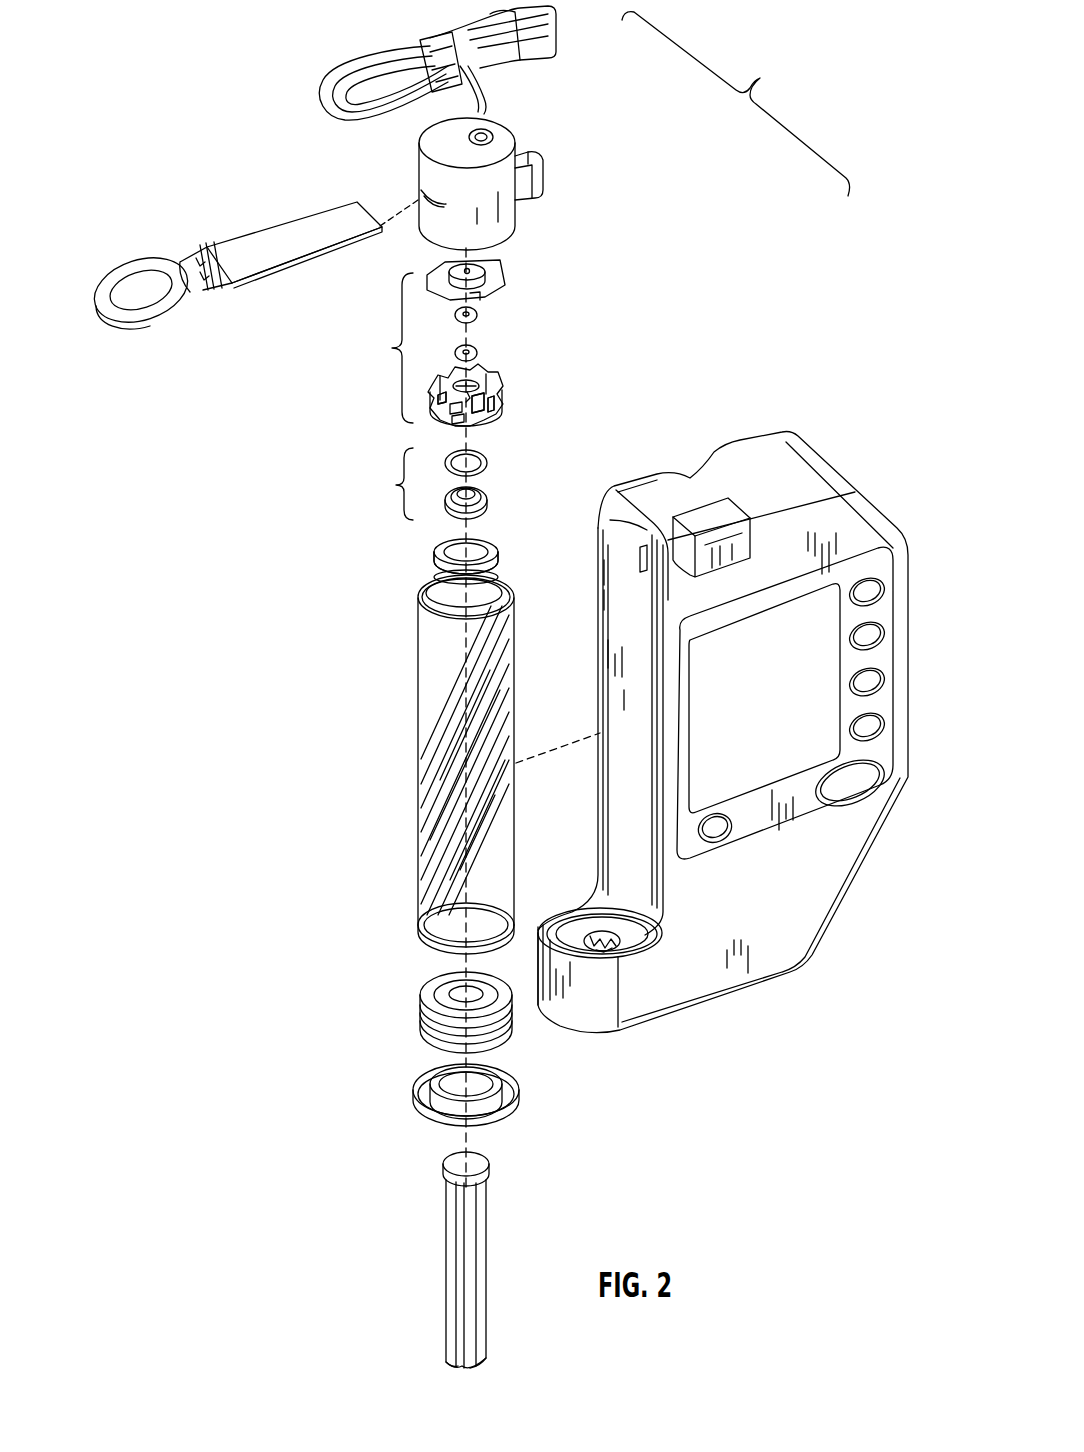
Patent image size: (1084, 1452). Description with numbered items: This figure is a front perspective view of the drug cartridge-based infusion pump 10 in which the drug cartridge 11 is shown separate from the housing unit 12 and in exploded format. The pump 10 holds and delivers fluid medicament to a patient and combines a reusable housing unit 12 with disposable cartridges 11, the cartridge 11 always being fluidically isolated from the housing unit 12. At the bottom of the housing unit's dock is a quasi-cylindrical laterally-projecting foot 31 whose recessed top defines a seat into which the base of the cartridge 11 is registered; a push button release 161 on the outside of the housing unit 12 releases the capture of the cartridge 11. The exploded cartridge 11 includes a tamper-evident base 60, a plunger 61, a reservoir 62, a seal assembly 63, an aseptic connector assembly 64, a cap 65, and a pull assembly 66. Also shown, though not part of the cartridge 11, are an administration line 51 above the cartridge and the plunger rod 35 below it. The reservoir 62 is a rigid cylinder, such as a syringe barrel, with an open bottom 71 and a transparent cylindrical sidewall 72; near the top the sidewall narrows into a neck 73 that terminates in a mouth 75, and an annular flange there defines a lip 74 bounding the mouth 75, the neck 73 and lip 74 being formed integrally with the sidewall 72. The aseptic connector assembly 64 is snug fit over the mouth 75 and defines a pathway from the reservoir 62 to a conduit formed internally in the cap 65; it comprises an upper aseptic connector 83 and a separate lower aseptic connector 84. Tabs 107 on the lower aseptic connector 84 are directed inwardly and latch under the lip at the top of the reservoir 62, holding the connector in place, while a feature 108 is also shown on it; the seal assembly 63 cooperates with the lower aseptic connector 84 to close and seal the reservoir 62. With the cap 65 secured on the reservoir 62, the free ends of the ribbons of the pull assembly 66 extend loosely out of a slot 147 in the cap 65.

The drug cartridge-based infusion pump 10 is at (736, 104).
The drug cartridge 11 is at (212, 968).
The housing unit 12 is at (723, 764).
The foot 31 is at (578, 1008).
The plunger rod 35 is at (446, 1262).
The cable 51 is at (395, 46).
The tamper-evident base 60 is at (410, 1102).
The plunger 61 is at (413, 1012).
The reservoir 62 is at (425, 761).
The seal assembly 63 is at (424, 484).
The aseptic connector assembly 64 is at (418, 348).
The cap 65 is at (512, 208).
The pull assembly 66 is at (272, 237).
The open bottom 71 is at (426, 924).
The cylindrical sidewall 72 is at (444, 827).
The neck 73 is at (460, 596).
The lip 74 is at (482, 545).
The mouth 75 is at (502, 562).
The upper aseptic connector 83 is at (514, 283).
The lower aseptic connector 84 is at (510, 388).
The tabs 107 is at (437, 420).
The valve port 108 is at (507, 400).
The slot 147 is at (417, 184).
The push button release 161 is at (715, 512).